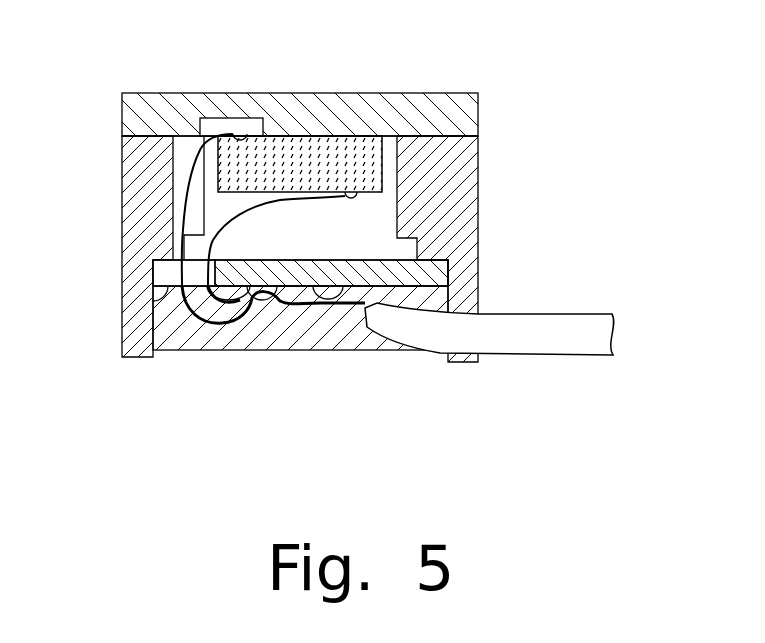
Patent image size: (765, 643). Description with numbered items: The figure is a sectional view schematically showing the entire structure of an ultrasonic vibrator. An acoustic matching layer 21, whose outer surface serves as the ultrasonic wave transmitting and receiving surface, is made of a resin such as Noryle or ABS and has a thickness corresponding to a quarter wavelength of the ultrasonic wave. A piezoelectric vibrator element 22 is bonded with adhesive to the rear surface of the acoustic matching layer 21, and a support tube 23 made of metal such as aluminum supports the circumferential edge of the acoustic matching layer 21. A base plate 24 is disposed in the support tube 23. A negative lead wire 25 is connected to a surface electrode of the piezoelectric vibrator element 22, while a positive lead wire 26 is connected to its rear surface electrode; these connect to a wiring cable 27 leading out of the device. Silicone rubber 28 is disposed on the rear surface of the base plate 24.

The acoustic matching layer 21 is at (276, 98).
The piezoelectric vibrator element 22 is at (350, 155).
The support tube 23 is at (472, 184).
The base plate 24 is at (388, 260).
The negative lead wire 25 is at (181, 178).
The positive lead wire 26 is at (255, 216).
The wiring cable 27 is at (585, 355).
The silicone rubber 28 is at (247, 343).